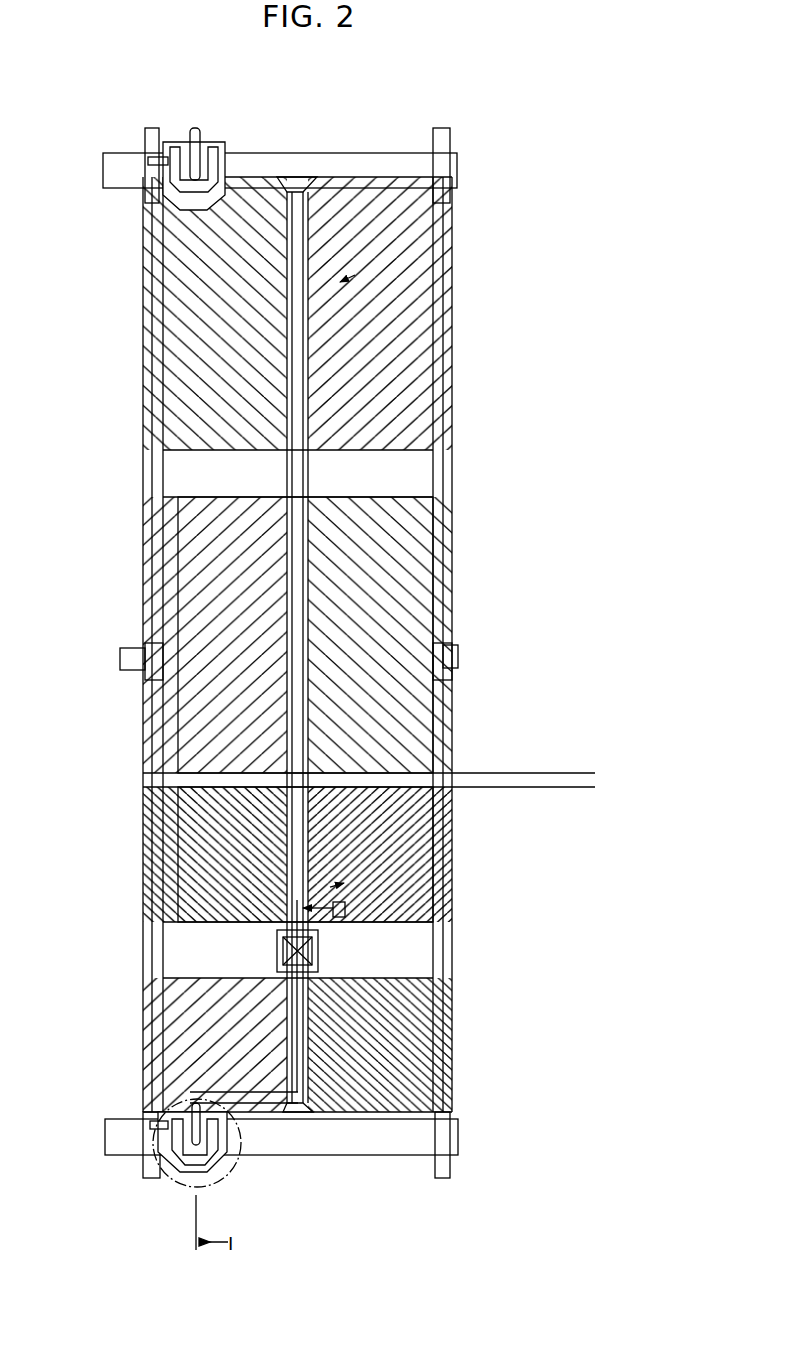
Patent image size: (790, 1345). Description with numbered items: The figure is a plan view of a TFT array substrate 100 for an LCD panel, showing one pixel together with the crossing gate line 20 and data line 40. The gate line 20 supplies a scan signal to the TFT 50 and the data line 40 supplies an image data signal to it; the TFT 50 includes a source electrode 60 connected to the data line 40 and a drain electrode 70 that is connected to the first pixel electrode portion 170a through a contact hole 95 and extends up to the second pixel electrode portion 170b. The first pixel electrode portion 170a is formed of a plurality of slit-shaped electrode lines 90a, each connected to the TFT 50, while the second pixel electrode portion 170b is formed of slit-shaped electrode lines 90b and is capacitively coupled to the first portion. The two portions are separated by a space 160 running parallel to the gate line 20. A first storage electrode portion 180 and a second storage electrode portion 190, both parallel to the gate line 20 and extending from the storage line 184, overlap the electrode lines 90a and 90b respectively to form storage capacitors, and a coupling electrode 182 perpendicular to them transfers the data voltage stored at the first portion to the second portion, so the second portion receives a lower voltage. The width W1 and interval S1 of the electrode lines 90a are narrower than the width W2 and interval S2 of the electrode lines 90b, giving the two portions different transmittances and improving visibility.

The TFT array substrate 100 is at (58, 110).
The gate line 20 is at (118, 1148).
The data line 40 is at (146, 1170).
The source electrode 60 is at (173, 1170).
The drain electrode 70 is at (206, 1175).
The TFT 50 is at (238, 1163).
The electrode lines 90a is at (398, 1062).
The electrode lines 90b is at (400, 723).
The contact hole 95 is at (307, 948).
The space 160 is at (455, 773).
The first pixel electrode portion 170a is at (467, 1112).
The second pixel electrode portion 170b is at (467, 177).
The first storage electrode portion 180 is at (427, 963).
The coupling electrode 182 is at (303, 825).
The storage line 184 is at (120, 657).
The second storage electrode portion 190 is at (418, 488).
The width of electrode line 90a W1 is at (340, 884).
The width of electrode line 90b W2 is at (350, 279).
The interval between electrode lines 90a S1 is at (345, 905).
The interval between electrode lines 90b S2 is at (350, 280).